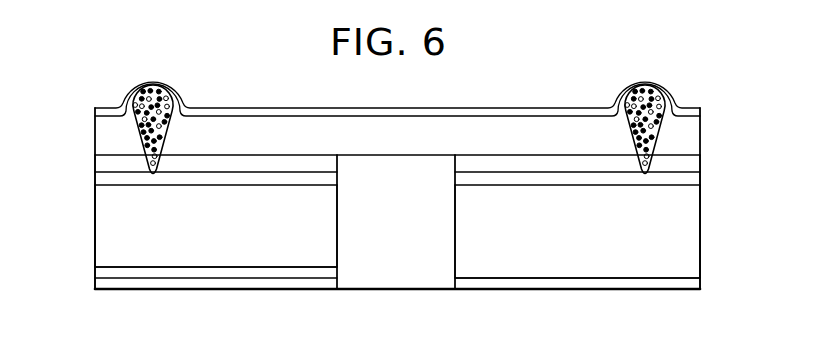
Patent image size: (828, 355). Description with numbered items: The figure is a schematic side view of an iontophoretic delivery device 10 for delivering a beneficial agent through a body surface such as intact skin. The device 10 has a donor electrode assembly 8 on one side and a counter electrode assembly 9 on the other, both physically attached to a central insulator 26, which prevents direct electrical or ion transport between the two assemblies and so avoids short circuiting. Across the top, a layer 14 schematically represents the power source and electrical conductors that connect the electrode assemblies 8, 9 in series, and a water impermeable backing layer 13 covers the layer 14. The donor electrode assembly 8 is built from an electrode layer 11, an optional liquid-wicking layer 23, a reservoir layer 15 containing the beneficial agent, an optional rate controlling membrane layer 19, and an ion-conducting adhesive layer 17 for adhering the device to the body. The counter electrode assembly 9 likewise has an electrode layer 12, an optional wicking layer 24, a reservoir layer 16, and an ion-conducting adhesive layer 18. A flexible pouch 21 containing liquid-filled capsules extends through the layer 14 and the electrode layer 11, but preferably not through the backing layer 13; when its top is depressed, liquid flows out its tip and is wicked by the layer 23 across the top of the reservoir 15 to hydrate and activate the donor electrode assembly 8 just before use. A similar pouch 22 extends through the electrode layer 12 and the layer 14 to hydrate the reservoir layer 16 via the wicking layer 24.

The donor electrode assembly 8 is at (95, 209).
The counter electrode assembly 9 is at (700, 220).
The iontophoretic delivery device 10 is at (509, 100).
The electrode layer 11 is at (107, 161).
The electrode layer 12 is at (692, 164).
The water impermeable backing layer 13 is at (325, 107).
The layer 14 is at (692, 136).
The reservoir layer 15 is at (115, 227).
The reservoir layer 16 is at (682, 252).
The ion-conducting adhesive layer 17 is at (238, 282).
The ion-conducting adhesive layer 18 is at (578, 283).
The rate controlling membrane layer 19 is at (153, 272).
The flexible pouch 21 is at (142, 88).
The pouch 22 is at (656, 92).
The wicking layer 23 is at (107, 176).
The wicking layer 24 is at (692, 180).
The insulator 26 is at (412, 270).